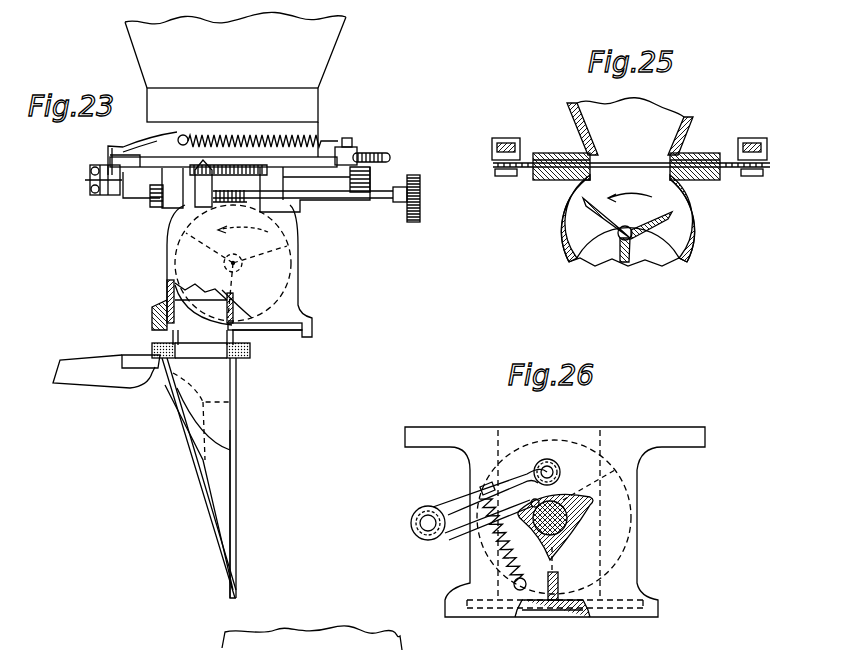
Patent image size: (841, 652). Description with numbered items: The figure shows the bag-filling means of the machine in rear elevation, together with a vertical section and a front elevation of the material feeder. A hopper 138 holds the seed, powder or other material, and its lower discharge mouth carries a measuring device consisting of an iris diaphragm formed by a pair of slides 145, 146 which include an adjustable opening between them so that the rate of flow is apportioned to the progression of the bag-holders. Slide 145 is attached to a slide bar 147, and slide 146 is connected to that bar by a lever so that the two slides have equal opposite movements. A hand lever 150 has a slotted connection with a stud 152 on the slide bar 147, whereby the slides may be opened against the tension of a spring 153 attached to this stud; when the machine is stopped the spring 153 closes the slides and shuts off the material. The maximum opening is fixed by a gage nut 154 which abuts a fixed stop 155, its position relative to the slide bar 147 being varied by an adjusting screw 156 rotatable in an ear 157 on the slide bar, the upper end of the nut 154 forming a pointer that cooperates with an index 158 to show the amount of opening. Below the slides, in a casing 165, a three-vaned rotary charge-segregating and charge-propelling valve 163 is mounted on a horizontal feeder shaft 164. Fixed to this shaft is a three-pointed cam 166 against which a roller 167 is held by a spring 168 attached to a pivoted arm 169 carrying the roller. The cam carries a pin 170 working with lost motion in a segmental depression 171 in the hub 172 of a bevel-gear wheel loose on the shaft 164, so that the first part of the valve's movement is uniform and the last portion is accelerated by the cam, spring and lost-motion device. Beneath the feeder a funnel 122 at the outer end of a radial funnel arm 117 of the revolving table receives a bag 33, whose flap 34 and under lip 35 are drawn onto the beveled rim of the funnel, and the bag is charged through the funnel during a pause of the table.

In FIG. 23, the hopper 138 is at (336, 38).
In FIG. 25, the hopper 138 is at (567, 122).
In FIG. 23, the index 158 is at (232, 105).
In FIG. 23, the spring 153 is at (305, 162).
In FIG. 23, the stud 152 is at (352, 146).
In FIG. 23, the hand lever 150 is at (385, 154).
In FIG. 23, the slide bar 147 is at (332, 168).
In FIG. 23, the fixed stop 155 is at (290, 232).
In FIG. 23, the adjusting screw 156 is at (240, 205).
In FIG. 23, the ear 157 is at (160, 182).
In FIG. 23, the gage nut 154 is at (200, 203).
In FIG. 23, the three-vaned rotary valve 163 is at (170, 292).
In FIG. 25, the three-vaned rotary valve 163 is at (583, 217).
In FIG. 23, the roller 167 is at (162, 323).
In FIG. 26, the roller 167 is at (555, 462).
In FIG. 23, the funnel 122 is at (222, 377).
In FIG. 23, the funnel arm 117 is at (82, 378).
In FIG. 23, the flap 34 is at (170, 383).
In FIG. 23, the under lip 35 is at (240, 413).
In FIG. 23, the bag 33 is at (236, 485).
In FIG. 25, the measuring slide 146 is at (523, 176).
In FIG. 25, the measuring slide 145 is at (747, 176).
In FIG. 26, the casing 165 is at (632, 505).
In FIG. 26, the three-pointed cam 166 is at (590, 508).
In FIG. 26, the feeder shaft 164 is at (577, 528).
In FIG. 26, the hub 172 is at (573, 547).
In FIG. 26, the pin 170 is at (520, 473).
In FIG. 26, the segmental depression 171 is at (497, 487).
In FIG. 26, the pivoted arm 169 is at (426, 506).
In FIG. 26, the spring 168 is at (500, 560).